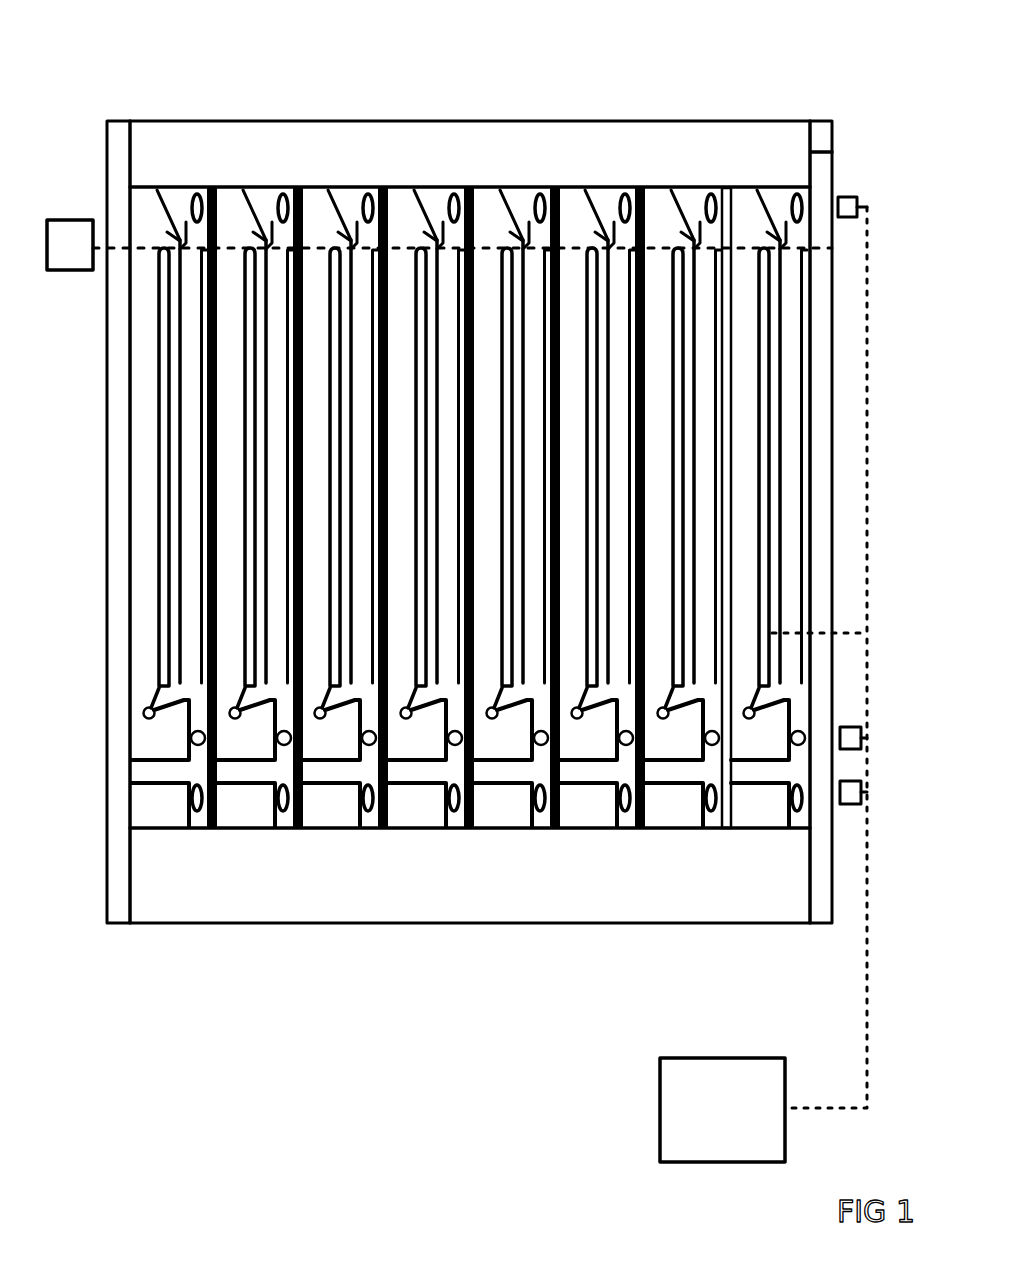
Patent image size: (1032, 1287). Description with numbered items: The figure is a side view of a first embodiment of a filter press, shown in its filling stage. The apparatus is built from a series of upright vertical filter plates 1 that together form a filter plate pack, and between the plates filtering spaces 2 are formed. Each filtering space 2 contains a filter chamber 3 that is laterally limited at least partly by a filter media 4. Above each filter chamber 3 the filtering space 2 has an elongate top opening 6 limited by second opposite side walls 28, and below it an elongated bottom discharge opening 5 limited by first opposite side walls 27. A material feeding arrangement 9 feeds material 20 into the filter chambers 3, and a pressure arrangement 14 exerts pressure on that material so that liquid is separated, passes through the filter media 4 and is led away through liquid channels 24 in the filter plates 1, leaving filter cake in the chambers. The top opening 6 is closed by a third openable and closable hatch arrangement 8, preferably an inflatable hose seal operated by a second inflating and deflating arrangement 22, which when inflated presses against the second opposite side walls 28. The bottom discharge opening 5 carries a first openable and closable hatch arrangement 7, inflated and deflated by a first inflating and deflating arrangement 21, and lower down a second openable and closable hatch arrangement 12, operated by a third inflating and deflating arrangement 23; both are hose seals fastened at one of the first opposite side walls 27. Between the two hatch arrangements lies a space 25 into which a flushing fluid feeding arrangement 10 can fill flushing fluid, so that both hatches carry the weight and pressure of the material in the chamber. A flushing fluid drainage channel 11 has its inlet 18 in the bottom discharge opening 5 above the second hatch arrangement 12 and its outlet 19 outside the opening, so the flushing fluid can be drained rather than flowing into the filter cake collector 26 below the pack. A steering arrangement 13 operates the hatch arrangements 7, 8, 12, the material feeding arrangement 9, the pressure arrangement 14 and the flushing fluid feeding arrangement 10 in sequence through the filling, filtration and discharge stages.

The filter plate 1 is at (194, 133).
The filtering space 2 is at (303, 377).
The filter chamber 3 is at (60, 297).
The filter media 4 is at (130, 461).
The elongated bottom discharge opening 5 is at (165, 888).
The elongate top opening 6 is at (303, 190).
The first openable and closable hatch arrangement 7 is at (137, 721).
The third openable and closable hatch arrangement 8 is at (497, 134).
The material feeding arrangement 9 is at (720, 145).
The flushing fluid feeding arrangement 10 is at (439, 245).
The flushing fluid drainage channel 11 is at (118, 736).
The second openable and closable hatch arrangement 12 is at (121, 794).
The steering arrangement 13 is at (741, 1126).
The pressure arrangement 14 is at (111, 478).
The inlet 18 is at (327, 852).
The outlet 19 is at (305, 886).
The material 20 is at (175, 215).
The first inflating and deflating arrangement 21 is at (860, 736).
The second inflating and deflating arrangement 22 is at (850, 198).
The third inflating and deflating arrangement 23 is at (855, 800).
The liquid channel 24 is at (104, 688).
The space 25 is at (550, 873).
The filter cake collector 26 is at (768, 905).
The first opposite side wall 27 is at (377, 830).
The second opposite side wall 28 is at (290, 119).